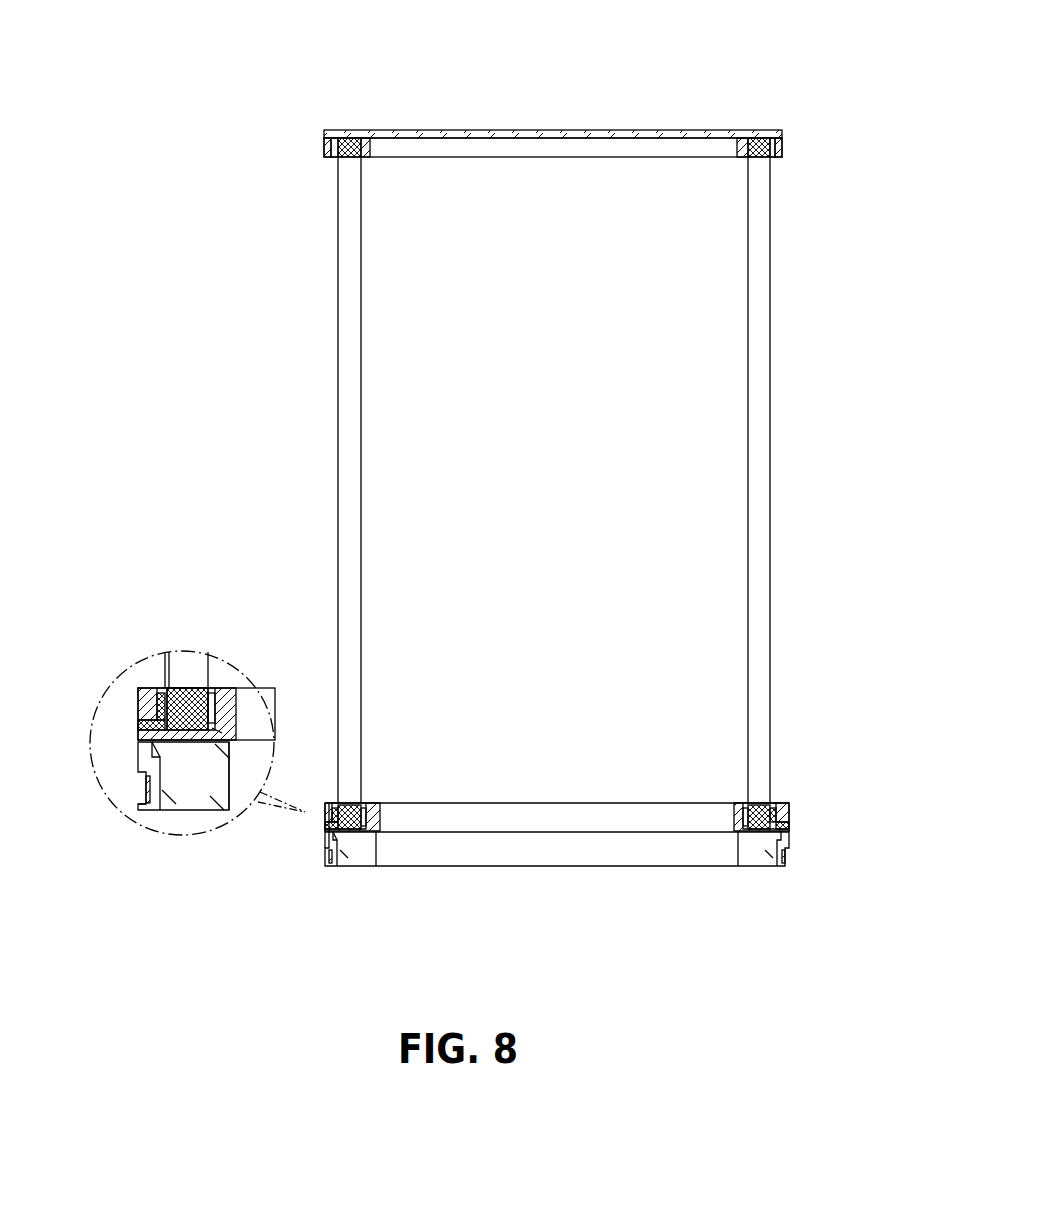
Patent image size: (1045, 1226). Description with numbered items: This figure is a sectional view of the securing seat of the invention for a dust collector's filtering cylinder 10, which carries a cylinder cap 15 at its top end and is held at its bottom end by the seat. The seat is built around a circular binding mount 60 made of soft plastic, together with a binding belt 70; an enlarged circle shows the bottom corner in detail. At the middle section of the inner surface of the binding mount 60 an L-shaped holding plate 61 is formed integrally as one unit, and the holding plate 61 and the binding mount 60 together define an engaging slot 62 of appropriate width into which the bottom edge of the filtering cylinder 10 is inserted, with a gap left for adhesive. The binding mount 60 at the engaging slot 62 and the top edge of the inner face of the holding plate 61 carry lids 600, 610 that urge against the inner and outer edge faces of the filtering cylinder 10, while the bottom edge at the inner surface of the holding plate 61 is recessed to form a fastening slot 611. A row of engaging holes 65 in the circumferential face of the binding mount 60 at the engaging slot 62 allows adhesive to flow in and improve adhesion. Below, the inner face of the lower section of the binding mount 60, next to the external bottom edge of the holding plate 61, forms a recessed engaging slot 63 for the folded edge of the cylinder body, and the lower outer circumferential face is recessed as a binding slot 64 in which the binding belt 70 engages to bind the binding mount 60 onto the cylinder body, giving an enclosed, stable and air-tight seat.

The filtering cylinder 10 is at (766, 283).
The cylinder cap 15 is at (640, 128).
The binding mount 60 is at (478, 837).
The holding plate 61 is at (385, 808).
The engaging slot 62 is at (366, 803).
The recessed engaging slot 63 is at (335, 838).
The binding slot 64 is at (328, 858).
The engaging hole 65 is at (330, 805).
The binding belt 70 is at (128, 803).
The lid 600 is at (160, 688).
The lid 610 is at (210, 688).
The fastening slot 611 is at (228, 770).